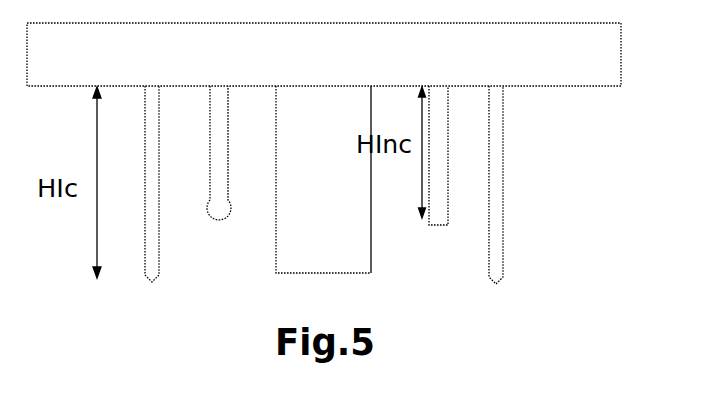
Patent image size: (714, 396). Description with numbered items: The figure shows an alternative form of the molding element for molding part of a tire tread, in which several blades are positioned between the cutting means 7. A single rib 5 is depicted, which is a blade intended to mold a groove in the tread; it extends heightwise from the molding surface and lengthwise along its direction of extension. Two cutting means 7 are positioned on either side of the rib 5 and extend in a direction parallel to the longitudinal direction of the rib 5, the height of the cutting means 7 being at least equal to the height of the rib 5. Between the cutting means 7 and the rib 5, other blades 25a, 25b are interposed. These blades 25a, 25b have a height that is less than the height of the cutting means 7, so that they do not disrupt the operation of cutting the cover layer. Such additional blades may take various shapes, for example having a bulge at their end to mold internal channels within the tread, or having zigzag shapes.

The rib 5 is at (333, 190).
The blade 25a is at (224, 173).
The blade 25b is at (440, 175).
The cutting means 7 is at (495, 255).